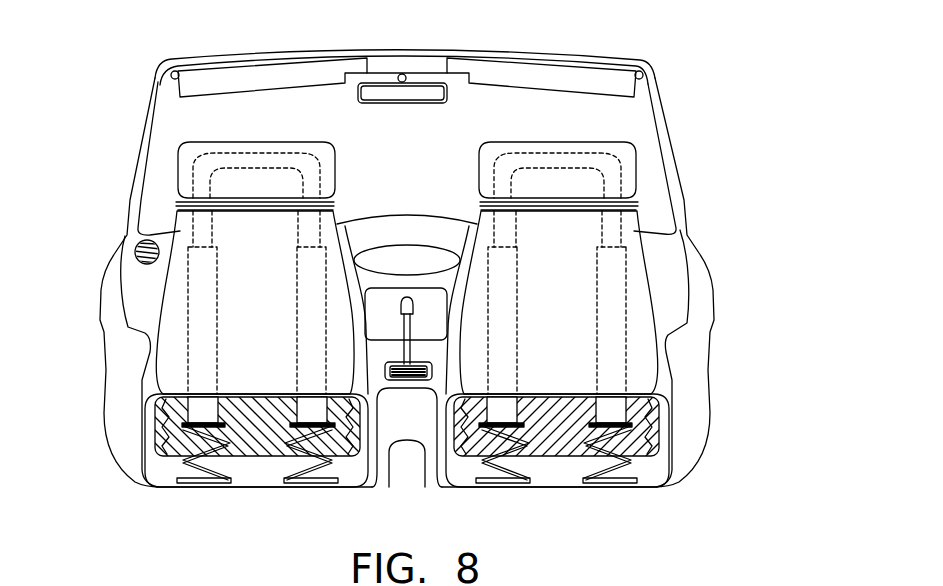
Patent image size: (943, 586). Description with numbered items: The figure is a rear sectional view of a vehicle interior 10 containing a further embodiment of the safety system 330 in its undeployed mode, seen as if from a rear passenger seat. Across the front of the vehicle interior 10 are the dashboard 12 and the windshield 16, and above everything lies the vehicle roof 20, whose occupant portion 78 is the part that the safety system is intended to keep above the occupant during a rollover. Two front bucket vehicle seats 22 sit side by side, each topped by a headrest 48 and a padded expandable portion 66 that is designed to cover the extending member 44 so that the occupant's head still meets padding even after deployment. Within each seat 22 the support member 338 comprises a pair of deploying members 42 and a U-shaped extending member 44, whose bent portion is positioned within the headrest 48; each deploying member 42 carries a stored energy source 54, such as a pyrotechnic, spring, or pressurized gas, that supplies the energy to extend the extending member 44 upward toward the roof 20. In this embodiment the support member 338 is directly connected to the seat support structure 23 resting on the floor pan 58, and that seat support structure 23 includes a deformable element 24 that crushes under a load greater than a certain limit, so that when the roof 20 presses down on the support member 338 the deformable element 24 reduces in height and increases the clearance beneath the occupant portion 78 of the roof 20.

The vehicle interior 10 is at (615, 126).
The dashboard 12 is at (410, 335).
The windshield 16 is at (432, 154).
The vehicle roof 20 is at (407, 48).
The vehicle seat 22 is at (177, 279).
The seat support structure 23 is at (303, 470).
The deformable element 24 is at (198, 468).
The deploying member 42 is at (307, 268).
The extending member 44 is at (307, 234).
The headrest 48 is at (320, 147).
The stored energy source 54 is at (640, 322).
The floor pan 58 is at (347, 488).
The padded expandable portion 66 is at (180, 206).
The occupant portion of the roof 78 is at (293, 52).
The safety system 330 is at (721, 229).
The support member 338 is at (203, 380).